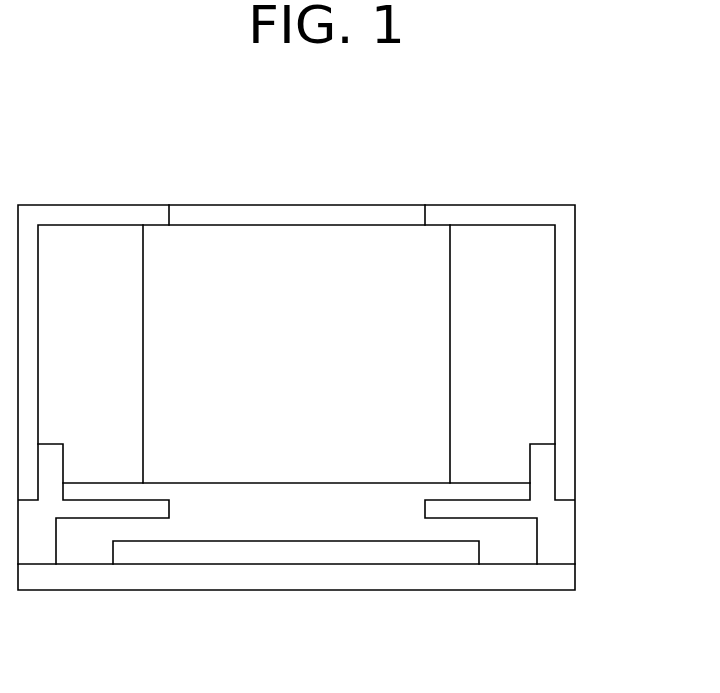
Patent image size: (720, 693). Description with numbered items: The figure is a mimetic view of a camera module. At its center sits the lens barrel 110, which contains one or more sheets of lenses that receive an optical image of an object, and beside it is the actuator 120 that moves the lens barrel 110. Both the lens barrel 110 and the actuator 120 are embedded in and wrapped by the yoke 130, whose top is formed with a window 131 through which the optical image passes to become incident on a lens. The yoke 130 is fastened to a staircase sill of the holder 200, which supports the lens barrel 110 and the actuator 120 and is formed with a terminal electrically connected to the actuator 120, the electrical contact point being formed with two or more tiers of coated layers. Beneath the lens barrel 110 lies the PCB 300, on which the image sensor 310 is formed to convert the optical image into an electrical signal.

The lens barrel 110 is at (423, 405).
The actuator 120 is at (533, 340).
The yoke 130 is at (558, 286).
The window 131 is at (423, 215).
The holder 200 is at (568, 534).
The PCB 300 is at (503, 580).
The image sensor 310 is at (403, 558).